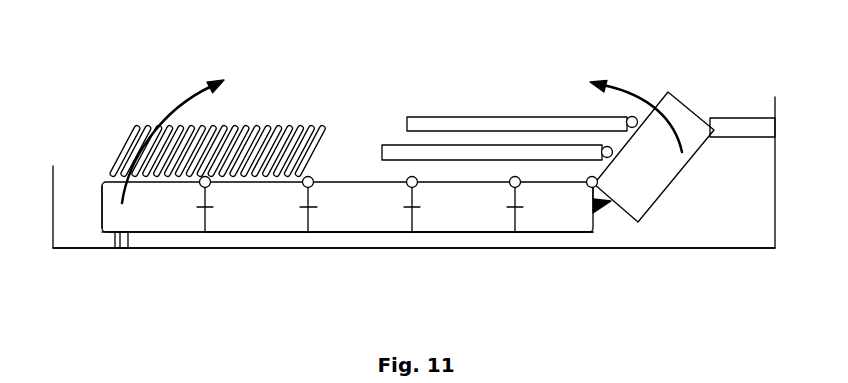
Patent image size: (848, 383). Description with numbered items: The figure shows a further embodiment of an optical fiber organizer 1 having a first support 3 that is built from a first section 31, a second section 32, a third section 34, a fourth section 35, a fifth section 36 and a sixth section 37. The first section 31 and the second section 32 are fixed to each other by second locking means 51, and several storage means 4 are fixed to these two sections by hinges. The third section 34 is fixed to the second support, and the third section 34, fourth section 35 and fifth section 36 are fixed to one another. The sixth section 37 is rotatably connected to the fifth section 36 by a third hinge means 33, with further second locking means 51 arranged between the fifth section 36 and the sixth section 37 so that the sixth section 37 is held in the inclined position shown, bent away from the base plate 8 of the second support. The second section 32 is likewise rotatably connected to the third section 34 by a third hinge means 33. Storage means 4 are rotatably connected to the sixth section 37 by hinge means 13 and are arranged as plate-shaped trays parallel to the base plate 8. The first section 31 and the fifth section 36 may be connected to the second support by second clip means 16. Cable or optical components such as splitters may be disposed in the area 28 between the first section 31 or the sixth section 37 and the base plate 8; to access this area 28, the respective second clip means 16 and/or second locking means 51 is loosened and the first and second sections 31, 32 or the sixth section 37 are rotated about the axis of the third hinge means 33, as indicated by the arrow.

The optical fiber organizer 1 is at (663, 69).
The first support 3 is at (748, 186).
The storage means 4 is at (307, 117).
The base plate 8 is at (398, 248).
The hinge means 13 is at (601, 152).
The second clip means 16 is at (120, 248).
The area 28 is at (140, 241).
The first section 31 is at (117, 213).
The second section 32 is at (233, 215).
The third hinge means 33 is at (212, 185).
The third section 34 is at (360, 215).
The fourth section 35 is at (465, 213).
The fifth section 36 is at (558, 207).
The sixth section 37 is at (645, 188).
The second locking means 51 is at (198, 212).